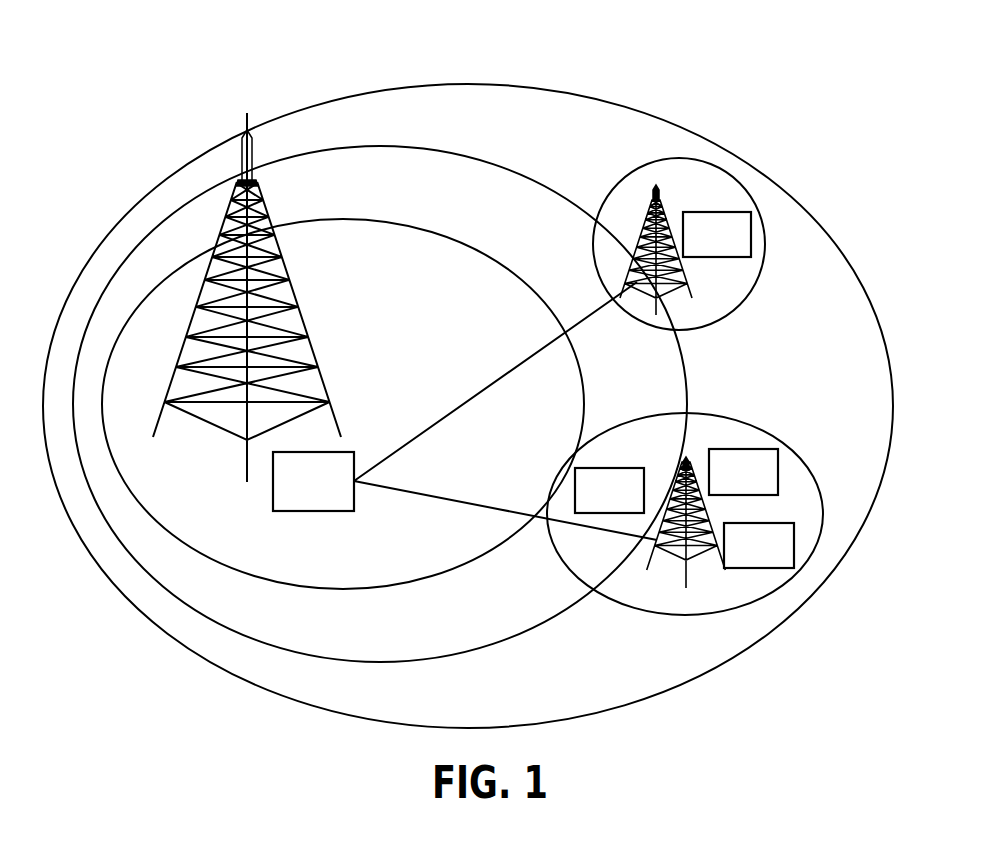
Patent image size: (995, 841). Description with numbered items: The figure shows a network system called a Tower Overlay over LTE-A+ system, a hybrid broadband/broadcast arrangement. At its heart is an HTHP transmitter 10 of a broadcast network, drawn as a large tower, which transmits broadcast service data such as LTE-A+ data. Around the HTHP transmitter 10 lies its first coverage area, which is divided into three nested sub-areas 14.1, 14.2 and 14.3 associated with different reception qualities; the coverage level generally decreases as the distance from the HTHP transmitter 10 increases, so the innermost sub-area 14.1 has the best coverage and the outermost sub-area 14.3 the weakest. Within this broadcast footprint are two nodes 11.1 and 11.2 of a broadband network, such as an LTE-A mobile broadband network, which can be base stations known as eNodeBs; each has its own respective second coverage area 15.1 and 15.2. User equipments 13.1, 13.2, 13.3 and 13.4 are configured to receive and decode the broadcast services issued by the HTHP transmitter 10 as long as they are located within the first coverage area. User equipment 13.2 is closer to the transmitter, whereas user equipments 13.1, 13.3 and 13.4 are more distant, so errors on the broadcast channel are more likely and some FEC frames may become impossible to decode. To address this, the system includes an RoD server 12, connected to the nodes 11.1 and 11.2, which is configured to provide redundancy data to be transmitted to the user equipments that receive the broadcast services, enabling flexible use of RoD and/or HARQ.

The HTHP transmitter 10 is at (307, 350).
The node 11.1 is at (660, 215).
The node 11.2 is at (700, 567).
The RoD server 12 is at (333, 511).
The user equipment 13.1 is at (722, 211).
The user equipment 13.2 is at (619, 468).
The user equipment 13.3 is at (778, 482).
The user equipment 13.4 is at (794, 549).
The sub-area 14.1 is at (336, 217).
The sub-area 14.2 is at (388, 147).
The sub-area 14.3 is at (475, 83).
The second coverage area 15.1 is at (760, 218).
The second coverage area 15.2 is at (768, 597).